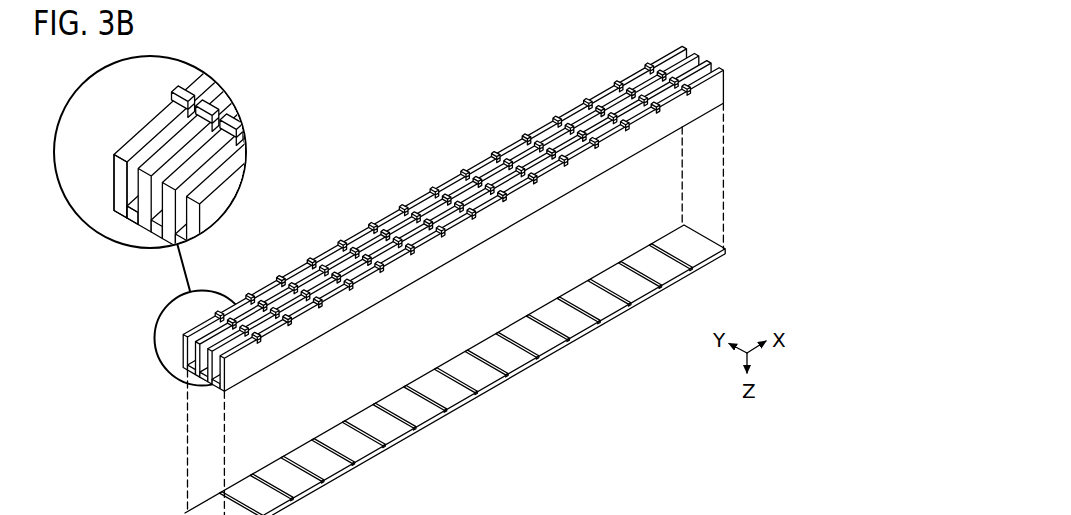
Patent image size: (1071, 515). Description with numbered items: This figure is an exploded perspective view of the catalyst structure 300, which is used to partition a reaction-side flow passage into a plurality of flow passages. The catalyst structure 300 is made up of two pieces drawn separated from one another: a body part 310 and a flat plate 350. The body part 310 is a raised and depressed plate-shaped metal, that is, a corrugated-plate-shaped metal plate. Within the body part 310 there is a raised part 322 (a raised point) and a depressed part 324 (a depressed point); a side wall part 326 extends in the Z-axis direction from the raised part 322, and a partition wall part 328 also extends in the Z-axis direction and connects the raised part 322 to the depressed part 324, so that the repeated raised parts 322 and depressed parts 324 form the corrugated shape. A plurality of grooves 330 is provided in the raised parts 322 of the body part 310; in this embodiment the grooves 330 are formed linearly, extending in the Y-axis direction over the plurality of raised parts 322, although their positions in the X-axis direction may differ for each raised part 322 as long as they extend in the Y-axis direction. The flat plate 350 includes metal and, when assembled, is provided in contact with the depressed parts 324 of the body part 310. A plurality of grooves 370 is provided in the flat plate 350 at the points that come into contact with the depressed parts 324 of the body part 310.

The catalyst structure 300 is at (449, 271).
The body part 310 is at (448, 209).
The raised part 322 is at (138, 146).
The depressed part 324 is at (134, 218).
The side wall part 326 is at (115, 181).
The partition wall part 328 is at (128, 201).
The grooves 330 is at (187, 110).
The flat plate 350 is at (455, 370).
The grooves 370 is at (417, 435).